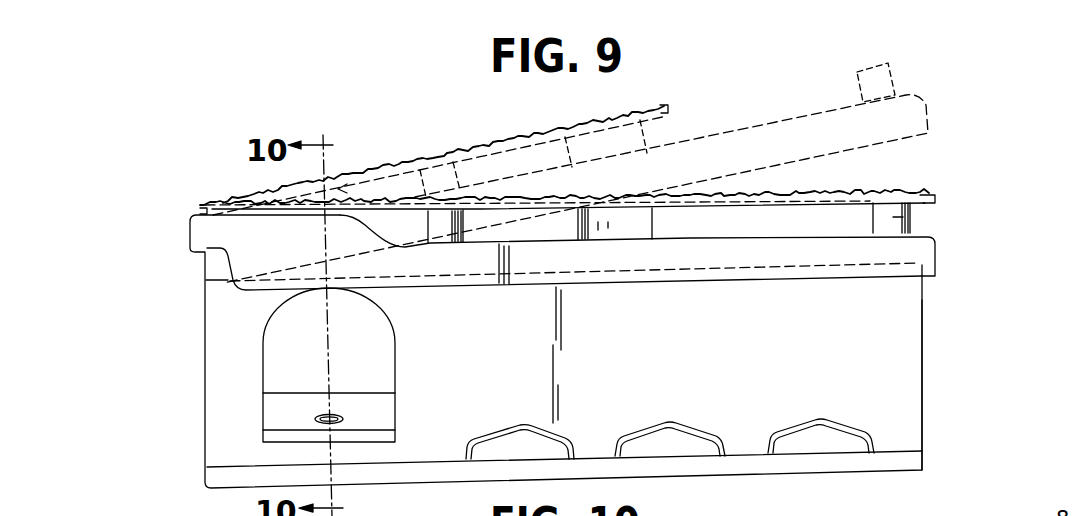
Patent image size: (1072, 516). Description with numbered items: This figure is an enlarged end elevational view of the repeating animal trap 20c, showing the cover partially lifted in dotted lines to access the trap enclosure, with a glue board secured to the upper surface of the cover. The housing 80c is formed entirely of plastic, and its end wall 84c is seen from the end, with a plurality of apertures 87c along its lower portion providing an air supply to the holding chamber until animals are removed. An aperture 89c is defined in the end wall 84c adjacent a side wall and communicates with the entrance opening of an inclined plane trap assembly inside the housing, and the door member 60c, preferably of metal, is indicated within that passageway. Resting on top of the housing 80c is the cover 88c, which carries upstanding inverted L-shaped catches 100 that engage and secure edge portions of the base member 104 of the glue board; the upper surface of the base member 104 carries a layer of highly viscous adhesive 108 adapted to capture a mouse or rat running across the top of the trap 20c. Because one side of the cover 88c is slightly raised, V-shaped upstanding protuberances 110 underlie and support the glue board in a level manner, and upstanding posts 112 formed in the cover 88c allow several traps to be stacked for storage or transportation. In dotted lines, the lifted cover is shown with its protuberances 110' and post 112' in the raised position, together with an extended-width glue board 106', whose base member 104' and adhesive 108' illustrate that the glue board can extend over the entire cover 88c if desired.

The repeating animal trap 20c is at (791, 105).
The housing 80c is at (167, 360).
The end wall 84c is at (893, 337).
The cover 88c is at (727, 250).
The aperture 89c is at (397, 348).
The door member 60c is at (265, 413).
The apertures 87c is at (818, 440).
The inverted L-shaped catches 100 is at (965, 507).
The base member 104 is at (562, 162).
The base member of extended-width glue board 104' is at (482, 144).
The extended-width glue board 106' is at (678, 78).
The adhesive 108 is at (567, 142).
The adhesive of extended-width glue board 108' is at (445, 141).
The upstanding protuberances 110 is at (602, 315).
The upstanding protuberances (raised cover position) 110' is at (686, 129).
The upstanding posts 112 is at (726, 268).
The upstanding post (raised cover position) 112' is at (922, 76).